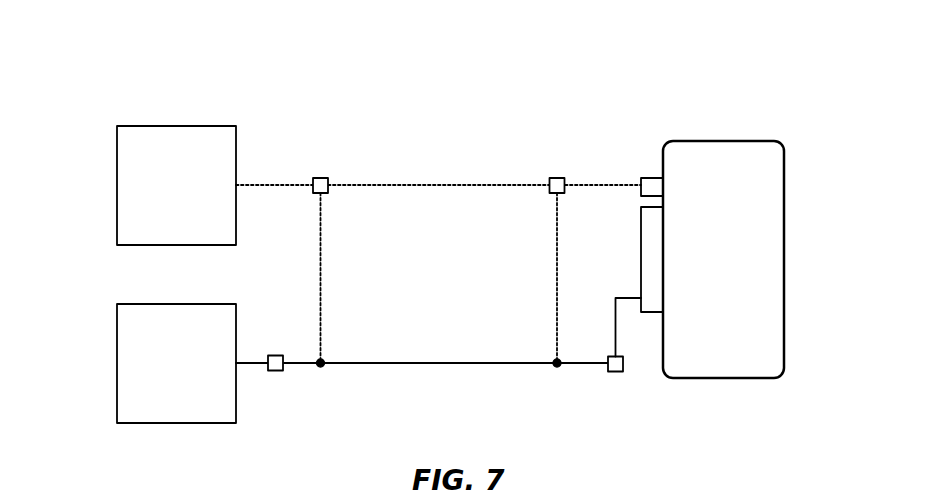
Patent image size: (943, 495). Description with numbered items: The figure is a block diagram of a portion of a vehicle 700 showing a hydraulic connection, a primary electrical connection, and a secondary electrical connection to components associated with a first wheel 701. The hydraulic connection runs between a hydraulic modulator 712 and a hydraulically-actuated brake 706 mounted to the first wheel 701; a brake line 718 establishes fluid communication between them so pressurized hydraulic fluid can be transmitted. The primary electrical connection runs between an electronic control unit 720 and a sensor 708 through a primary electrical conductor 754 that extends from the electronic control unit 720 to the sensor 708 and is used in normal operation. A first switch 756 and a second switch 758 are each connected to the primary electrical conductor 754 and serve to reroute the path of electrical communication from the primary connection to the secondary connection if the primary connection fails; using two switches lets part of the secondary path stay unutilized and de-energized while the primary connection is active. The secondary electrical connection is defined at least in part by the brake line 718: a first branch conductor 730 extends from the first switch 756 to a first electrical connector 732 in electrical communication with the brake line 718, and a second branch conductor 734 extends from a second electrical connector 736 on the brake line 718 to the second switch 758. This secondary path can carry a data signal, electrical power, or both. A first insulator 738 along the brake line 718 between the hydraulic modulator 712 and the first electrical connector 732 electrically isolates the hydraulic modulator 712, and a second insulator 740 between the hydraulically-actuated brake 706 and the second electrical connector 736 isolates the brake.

The vehicle 700 is at (124, 71).
The first wheel 701 is at (744, 141).
The hydraulically-actuated brake 706 is at (641, 238).
The sensor 708 is at (650, 177).
The hydraulic modulator 712 is at (176, 363).
The brake line 718 is at (405, 362).
The electronic control unit 720 is at (176, 185).
The first branch conductor 730 is at (322, 230).
The first electrical connector 732 is at (323, 368).
The second branch conductor 734 is at (557, 235).
The second electrical connector 736 is at (554, 368).
The first insulator 738 is at (276, 372).
The second insulator 740 is at (616, 373).
The primary electrical conductor 754 is at (420, 183).
The first switch 756 is at (321, 177).
The second switch 758 is at (550, 177).